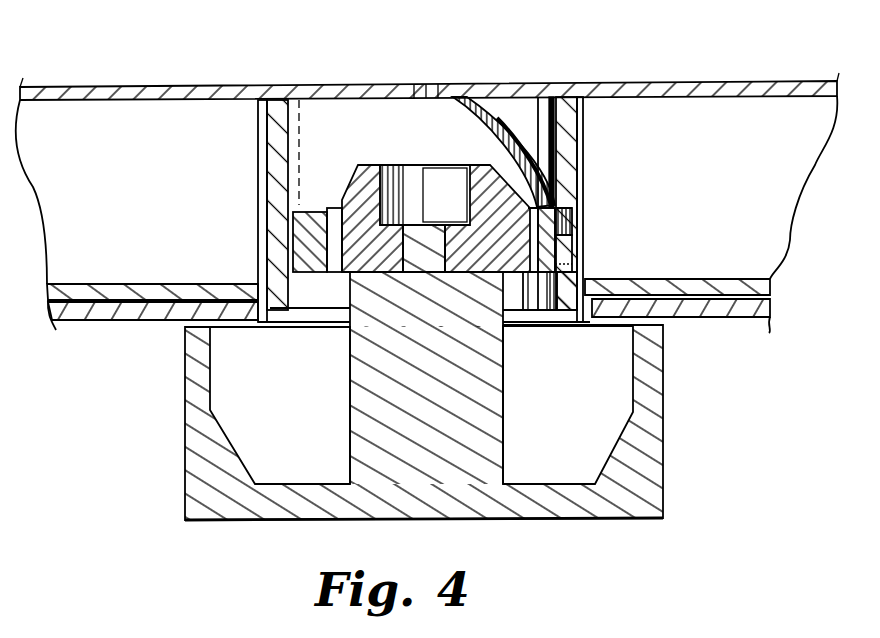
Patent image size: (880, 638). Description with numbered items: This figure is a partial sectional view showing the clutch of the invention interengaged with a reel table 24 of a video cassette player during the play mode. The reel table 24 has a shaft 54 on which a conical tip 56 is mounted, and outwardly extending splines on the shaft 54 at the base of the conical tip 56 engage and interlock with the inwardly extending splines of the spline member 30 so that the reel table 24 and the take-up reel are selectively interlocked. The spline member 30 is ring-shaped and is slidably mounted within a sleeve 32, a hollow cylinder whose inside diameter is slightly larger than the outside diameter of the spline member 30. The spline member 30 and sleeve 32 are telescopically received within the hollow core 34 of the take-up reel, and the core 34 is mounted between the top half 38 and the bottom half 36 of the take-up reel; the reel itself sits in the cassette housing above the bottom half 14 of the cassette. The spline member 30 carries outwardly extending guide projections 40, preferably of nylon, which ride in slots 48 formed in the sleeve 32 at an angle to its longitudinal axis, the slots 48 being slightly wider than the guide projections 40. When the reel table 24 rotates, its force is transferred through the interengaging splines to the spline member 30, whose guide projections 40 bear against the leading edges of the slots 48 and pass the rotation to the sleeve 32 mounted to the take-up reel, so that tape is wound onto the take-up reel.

The bottom half 14 is at (121, 312).
The reel table 24 is at (670, 437).
The spline member 30 is at (300, 239).
The sleeve 32 is at (277, 138).
The hollow core 34 is at (258, 173).
The bottom half 36 is at (85, 292).
The top half 38 is at (620, 84).
The guide projections 40 is at (566, 245).
The slots 48 is at (553, 207).
The shaft 54 is at (493, 380).
The conical tip 56 is at (367, 180).